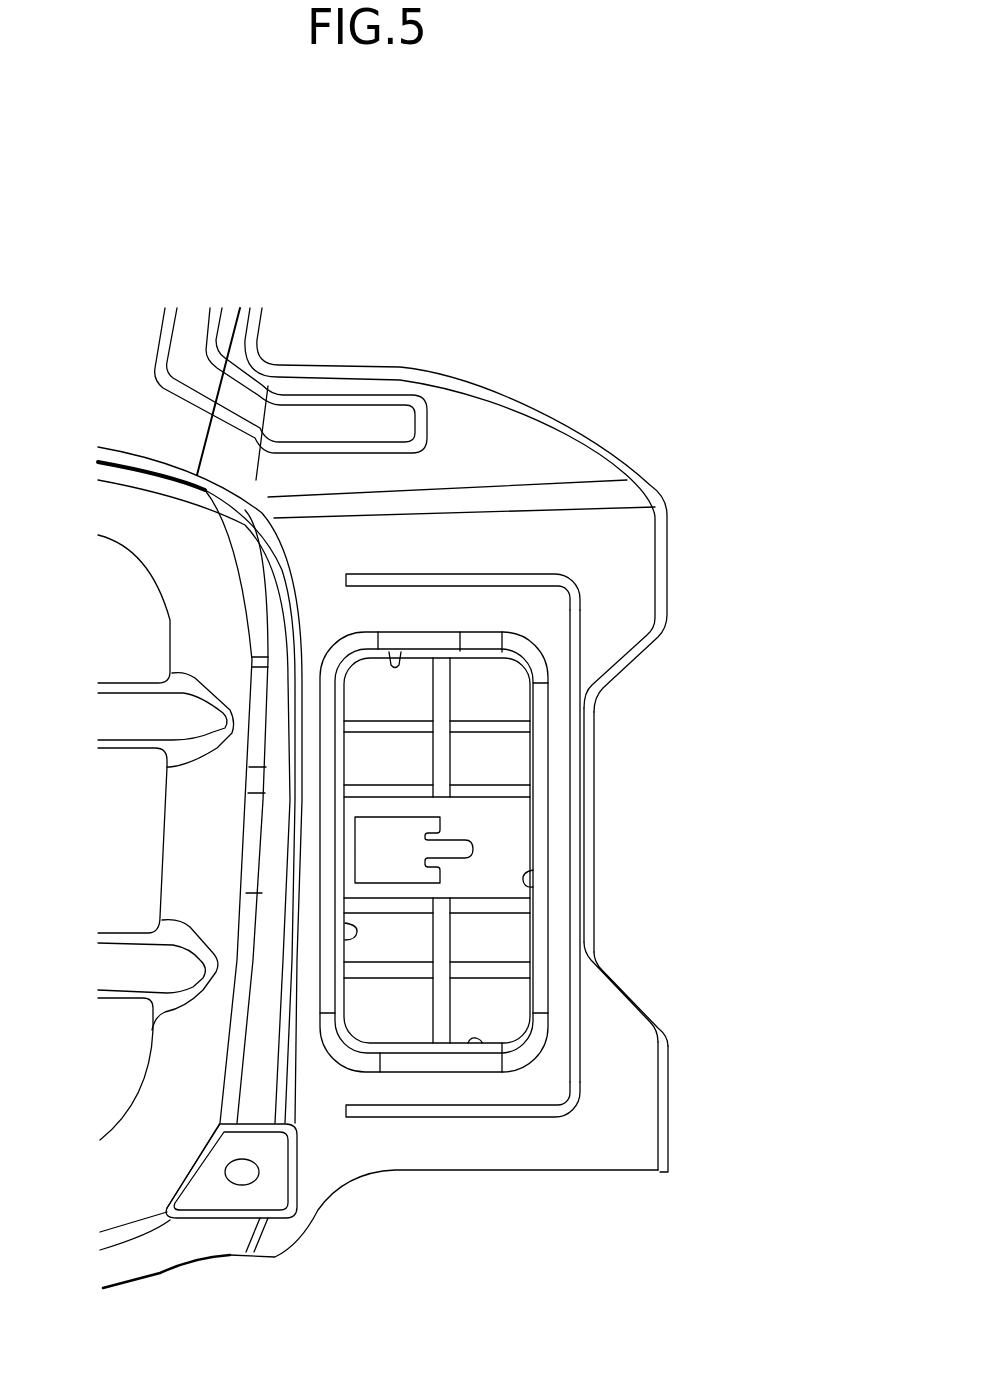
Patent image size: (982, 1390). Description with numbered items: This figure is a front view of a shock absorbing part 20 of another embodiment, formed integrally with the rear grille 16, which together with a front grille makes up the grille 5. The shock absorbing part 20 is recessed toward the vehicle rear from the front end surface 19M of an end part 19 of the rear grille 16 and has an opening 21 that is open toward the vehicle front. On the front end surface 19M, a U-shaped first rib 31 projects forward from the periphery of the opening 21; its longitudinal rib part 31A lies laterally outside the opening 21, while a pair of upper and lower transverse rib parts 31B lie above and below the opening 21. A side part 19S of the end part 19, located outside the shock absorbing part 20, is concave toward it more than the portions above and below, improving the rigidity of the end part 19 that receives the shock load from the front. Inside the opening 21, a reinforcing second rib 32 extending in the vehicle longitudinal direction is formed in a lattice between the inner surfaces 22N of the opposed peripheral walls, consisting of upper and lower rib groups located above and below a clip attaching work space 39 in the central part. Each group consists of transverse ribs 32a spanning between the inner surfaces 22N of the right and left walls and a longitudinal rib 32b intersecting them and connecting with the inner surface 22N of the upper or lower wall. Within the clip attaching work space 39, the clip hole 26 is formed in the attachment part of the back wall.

The grille 5 is at (221, 688).
The rear grille 16 is at (78, 243).
The end part 19 is at (680, 1165).
The side part 19S is at (600, 776).
The front end surface 19M is at (632, 1058).
The shock absorbing part 20 is at (327, 1102).
The opening 21 is at (417, 1030).
The inner surfaces 22N is at (395, 660).
The clip hole 26 is at (368, 848).
The first rib 31 is at (560, 886).
The longitudinal rib part 31A is at (580, 857).
The transverse rib parts 31B is at (465, 576).
The second rib 32 is at (560, 850).
The transverse ribs 32a is at (497, 722).
The longitudinal rib 32b is at (447, 688).
The clip attaching work space 39 is at (508, 830).